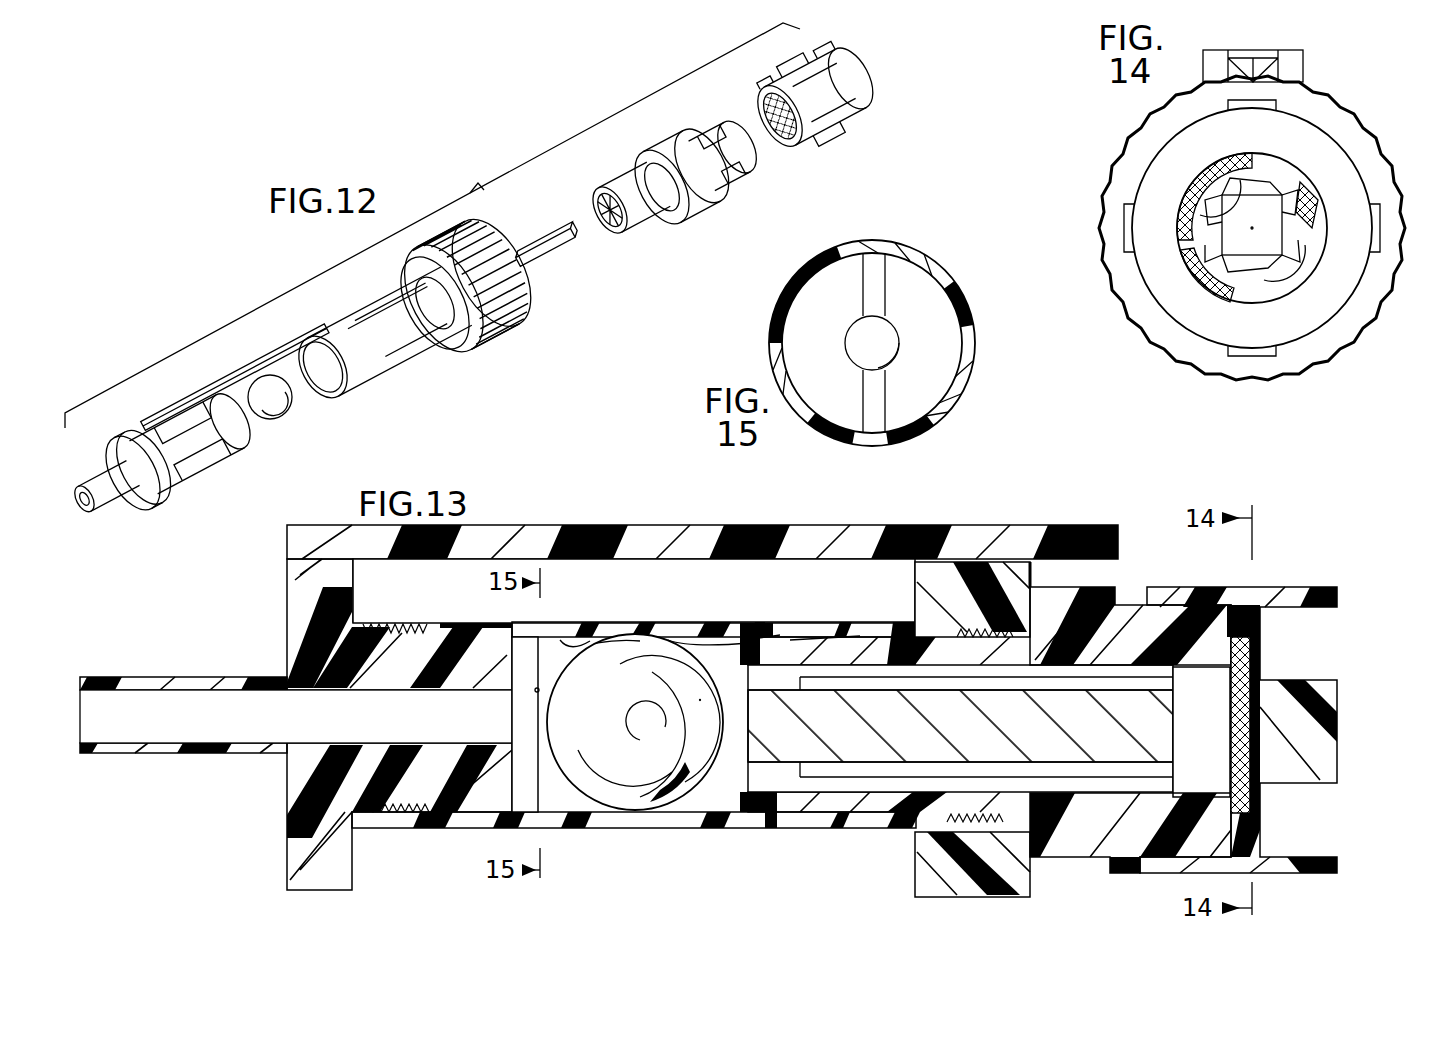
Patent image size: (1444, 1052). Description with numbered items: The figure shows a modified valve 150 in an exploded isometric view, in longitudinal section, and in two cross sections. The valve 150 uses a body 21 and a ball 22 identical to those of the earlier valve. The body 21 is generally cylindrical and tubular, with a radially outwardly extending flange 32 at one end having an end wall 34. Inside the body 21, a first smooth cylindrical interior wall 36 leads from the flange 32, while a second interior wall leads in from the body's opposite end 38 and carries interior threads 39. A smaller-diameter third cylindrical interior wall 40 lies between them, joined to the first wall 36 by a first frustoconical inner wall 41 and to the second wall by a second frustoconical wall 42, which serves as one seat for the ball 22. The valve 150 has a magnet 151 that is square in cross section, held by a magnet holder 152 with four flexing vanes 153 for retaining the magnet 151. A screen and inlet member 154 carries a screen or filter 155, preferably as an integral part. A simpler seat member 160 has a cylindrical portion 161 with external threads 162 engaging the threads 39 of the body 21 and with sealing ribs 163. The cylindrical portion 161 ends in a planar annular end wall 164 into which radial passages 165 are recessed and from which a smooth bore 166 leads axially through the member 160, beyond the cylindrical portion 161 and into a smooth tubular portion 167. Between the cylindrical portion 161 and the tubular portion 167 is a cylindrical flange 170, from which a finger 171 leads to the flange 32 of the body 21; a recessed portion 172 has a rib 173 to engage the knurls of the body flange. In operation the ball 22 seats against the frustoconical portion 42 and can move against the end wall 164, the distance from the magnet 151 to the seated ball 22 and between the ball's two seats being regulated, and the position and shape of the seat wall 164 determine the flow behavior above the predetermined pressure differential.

In FIG. 12, the body member 21 is at (418, 366).
In FIG. 15, the body member 21 is at (972, 312).
In FIG. 13, the body member 21 is at (665, 818).
In FIG. 12, the ball 22 is at (270, 420).
In FIG. 13, the ball 22 is at (622, 727).
In FIG. 13, the flange 32 is at (920, 572).
In FIG. 13, the end wall 34 is at (1022, 565).
In FIG. 13, the first smooth cylindrical interior wall 36 is at (835, 614).
In FIG. 13, the opposite end 38 is at (600, 616).
In FIG. 13, the interior threads 39 is at (388, 814).
In FIG. 13, the third cylindrical interior wall 40 is at (682, 640).
In FIG. 13, the first frustoconical inner wall 41 is at (778, 636).
In FIG. 13, the second frustoconical wall 42 is at (606, 630).
In FIG. 12, the valve 150 is at (465, 173).
In FIG. 14, the valve 150 is at (1113, 150).
In FIG. 13, the valve 150 is at (1110, 506).
In FIG. 12, the magnet 151 is at (559, 266).
In FIG. 14, the magnet 151 is at (1270, 240).
In FIG. 13, the magnet 151 is at (966, 738).
In FIG. 12, the magnet holder 152 is at (683, 222).
In FIG. 14, the magnet holder 152 is at (1350, 320).
In FIG. 13, the magnet holder 152 is at (1098, 594).
In FIG. 12, the flexing vanes 153 is at (622, 220).
In FIG. 14, the flexing vanes 153 is at (1278, 178).
In FIG. 13, the flexing vanes 153 is at (975, 772).
In FIG. 12, the screen and inlet member 154 is at (850, 137).
In FIG. 14, the screen and inlet member 154 is at (1312, 319).
In FIG. 13, the screen and inlet member 154 is at (1262, 590).
In FIG. 12, the screen or filter 155 is at (768, 135).
In FIG. 14, the screen or filter 155 is at (1352, 185).
In FIG. 13, the screen or filter 155 is at (1250, 668).
In FIG. 12, the seat member 160 is at (214, 478).
In FIG. 15, the seat member 160 is at (945, 341).
In FIG. 14, the seat member 160 is at (1295, 50).
In FIG. 13, the seat member 160 is at (285, 642).
In FIG. 13, the cylindrical portion 161 is at (410, 648).
In FIG. 13, the external threads 162 is at (372, 824).
In FIG. 13, the sealing ribs 163 is at (495, 620).
In FIG. 15, the planar annular end wall 164 is at (833, 341).
In FIG. 13, the planar annular end wall 164 is at (520, 722).
In FIG. 15, the radial passages 165 is at (873, 270).
In FIG. 15, the smooth bore 166 is at (880, 358).
In FIG. 13, the smooth bore 166 is at (536, 690).
In FIG. 13, the tubular portion 167 is at (176, 686).
In FIG. 13, the cylindrical flange 170 is at (675, 688).
In FIG. 13, the finger 171 is at (563, 528).
In FIG. 13, the recessed portion 172 is at (998, 561).
In FIG. 13, the rib 173 is at (1012, 560).